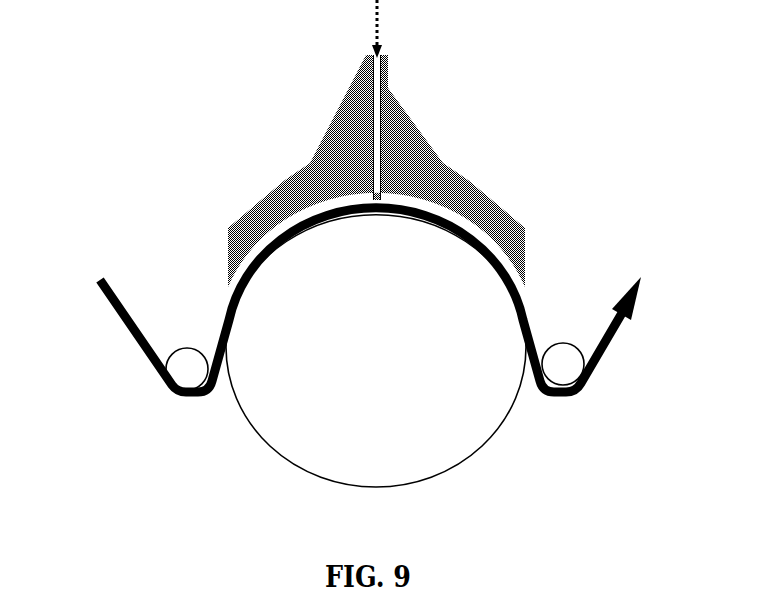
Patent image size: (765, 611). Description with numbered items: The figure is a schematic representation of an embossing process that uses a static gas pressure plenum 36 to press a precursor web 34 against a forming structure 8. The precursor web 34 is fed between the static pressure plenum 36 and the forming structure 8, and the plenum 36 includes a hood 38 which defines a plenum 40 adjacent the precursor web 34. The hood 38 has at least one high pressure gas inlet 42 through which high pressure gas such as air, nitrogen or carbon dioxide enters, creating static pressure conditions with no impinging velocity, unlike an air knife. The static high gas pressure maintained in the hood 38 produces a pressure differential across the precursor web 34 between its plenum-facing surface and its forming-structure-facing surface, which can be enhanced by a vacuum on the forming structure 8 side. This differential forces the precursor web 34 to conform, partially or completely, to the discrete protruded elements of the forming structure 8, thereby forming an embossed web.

The forming structure 8 is at (502, 423).
The precursor web 34 is at (127, 327).
The static pressure plenum 36 is at (374, 156).
The hood 38 is at (425, 167).
The plenum 40 is at (494, 240).
The high pressure gas inlet 42 is at (382, 137).